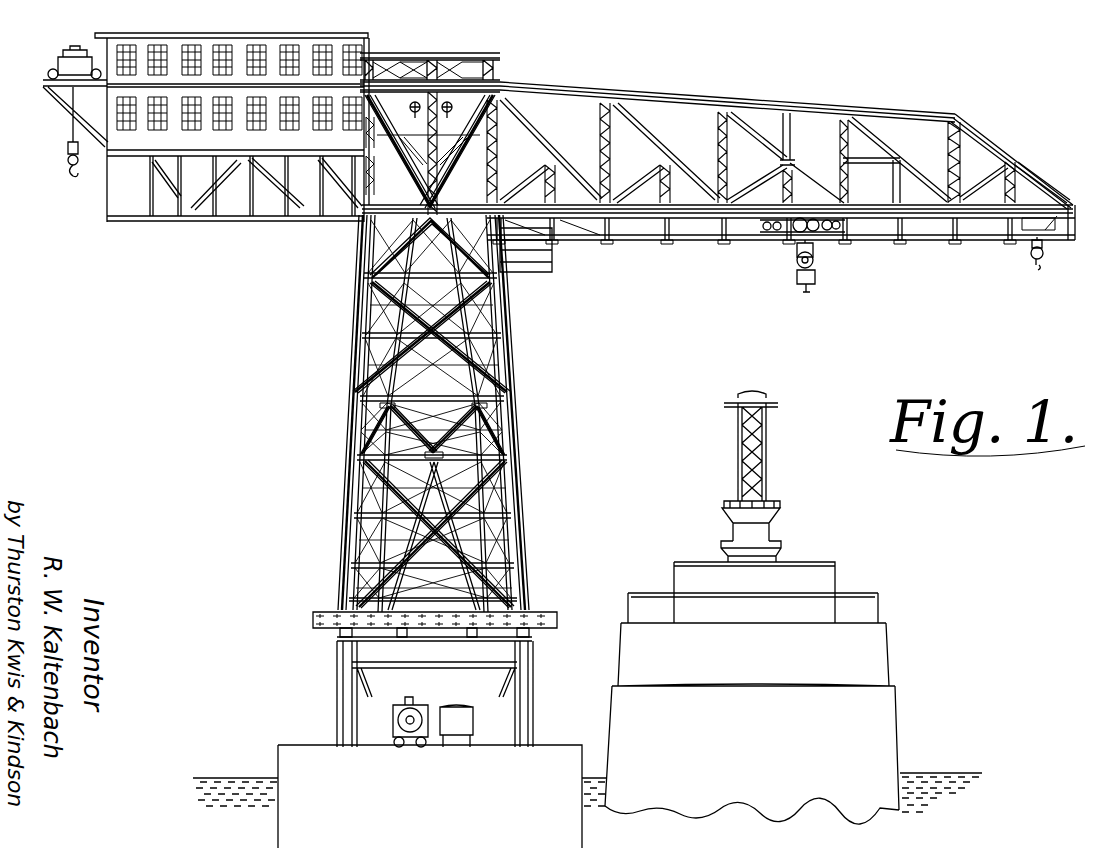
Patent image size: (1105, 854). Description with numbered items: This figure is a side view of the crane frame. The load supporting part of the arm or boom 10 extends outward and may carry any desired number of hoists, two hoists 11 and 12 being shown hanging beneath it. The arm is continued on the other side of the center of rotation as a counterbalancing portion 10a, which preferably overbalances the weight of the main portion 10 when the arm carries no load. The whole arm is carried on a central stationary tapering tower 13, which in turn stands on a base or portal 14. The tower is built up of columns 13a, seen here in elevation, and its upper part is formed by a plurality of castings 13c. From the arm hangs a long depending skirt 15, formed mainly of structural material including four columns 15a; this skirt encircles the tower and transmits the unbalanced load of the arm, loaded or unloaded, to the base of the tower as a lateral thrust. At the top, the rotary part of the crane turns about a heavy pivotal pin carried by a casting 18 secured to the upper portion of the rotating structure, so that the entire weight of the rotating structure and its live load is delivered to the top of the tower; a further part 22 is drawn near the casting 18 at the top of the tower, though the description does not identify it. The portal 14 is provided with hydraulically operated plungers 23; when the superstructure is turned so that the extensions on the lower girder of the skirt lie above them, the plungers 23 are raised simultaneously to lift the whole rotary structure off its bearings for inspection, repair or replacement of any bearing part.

The load supporting part of the arm or boom 10 is at (742, 97).
The counterbalancing portion 10a is at (258, 219).
The hoist 11 is at (812, 288).
The hoist 12 is at (1036, 264).
The central stationary tapering tower 13 is at (433, 352).
The columns 13a is at (487, 445).
The castings 13c is at (442, 171).
The base or portal 14 is at (516, 664).
The depending skirt 15 is at (510, 385).
The columns 15a is at (353, 371).
The casting 18 is at (417, 113).
The sheave 22 is at (445, 113).
The hydraulically operated plungers 23 is at (529, 632).